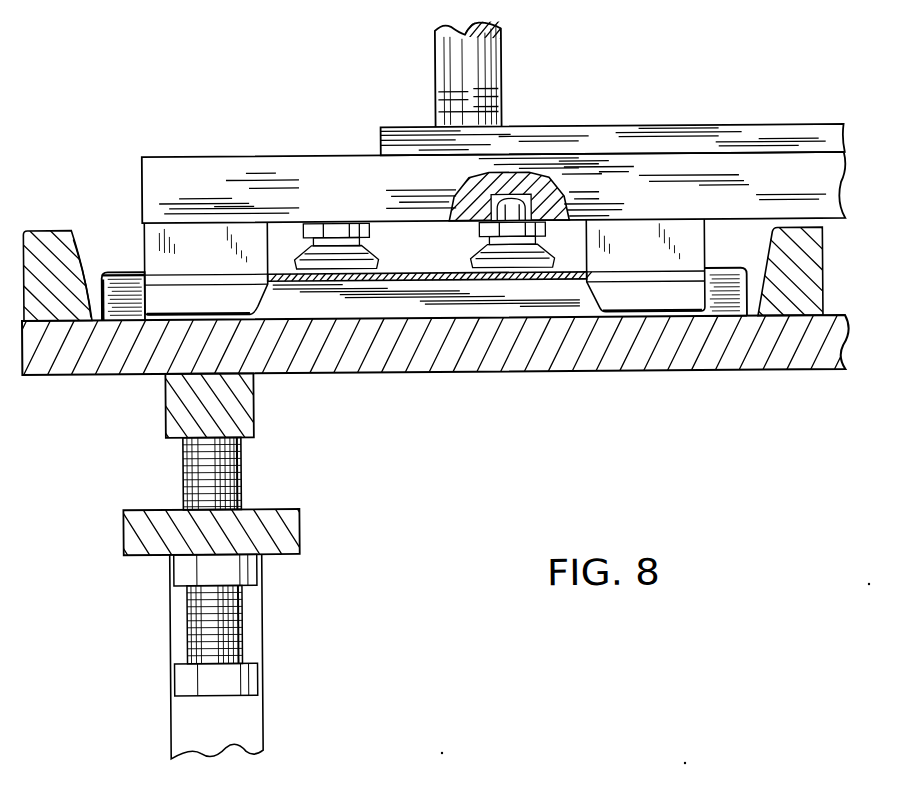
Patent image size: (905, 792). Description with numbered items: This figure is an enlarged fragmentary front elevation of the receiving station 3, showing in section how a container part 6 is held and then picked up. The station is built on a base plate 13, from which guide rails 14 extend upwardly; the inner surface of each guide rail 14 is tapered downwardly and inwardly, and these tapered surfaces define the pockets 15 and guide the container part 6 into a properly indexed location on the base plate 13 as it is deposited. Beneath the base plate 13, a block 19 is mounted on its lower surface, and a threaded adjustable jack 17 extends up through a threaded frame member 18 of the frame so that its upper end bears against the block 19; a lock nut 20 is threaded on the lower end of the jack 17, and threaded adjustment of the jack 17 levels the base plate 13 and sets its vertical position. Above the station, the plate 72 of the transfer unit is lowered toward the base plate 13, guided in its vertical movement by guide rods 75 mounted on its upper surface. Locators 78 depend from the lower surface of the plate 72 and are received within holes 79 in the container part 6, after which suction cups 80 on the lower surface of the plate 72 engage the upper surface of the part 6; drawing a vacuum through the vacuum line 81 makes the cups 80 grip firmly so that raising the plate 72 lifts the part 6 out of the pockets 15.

The receiving station 3 is at (789, 127).
The container parts 6 is at (104, 272).
The base plate 13 is at (405, 360).
The guide rails 14 is at (50, 250).
The pockets 15 is at (83, 252).
The adjustable jack 17 is at (240, 474).
The threaded frame member 18 is at (130, 520).
The block 19 is at (178, 395).
The lock nut 20 is at (258, 567).
The plate 72 is at (305, 182).
The guide rod 75 is at (437, 53).
The locators 78 is at (265, 300).
The holes 79 is at (130, 272).
The suction cups 80 is at (472, 256).
The vacuum line 81 is at (525, 198).